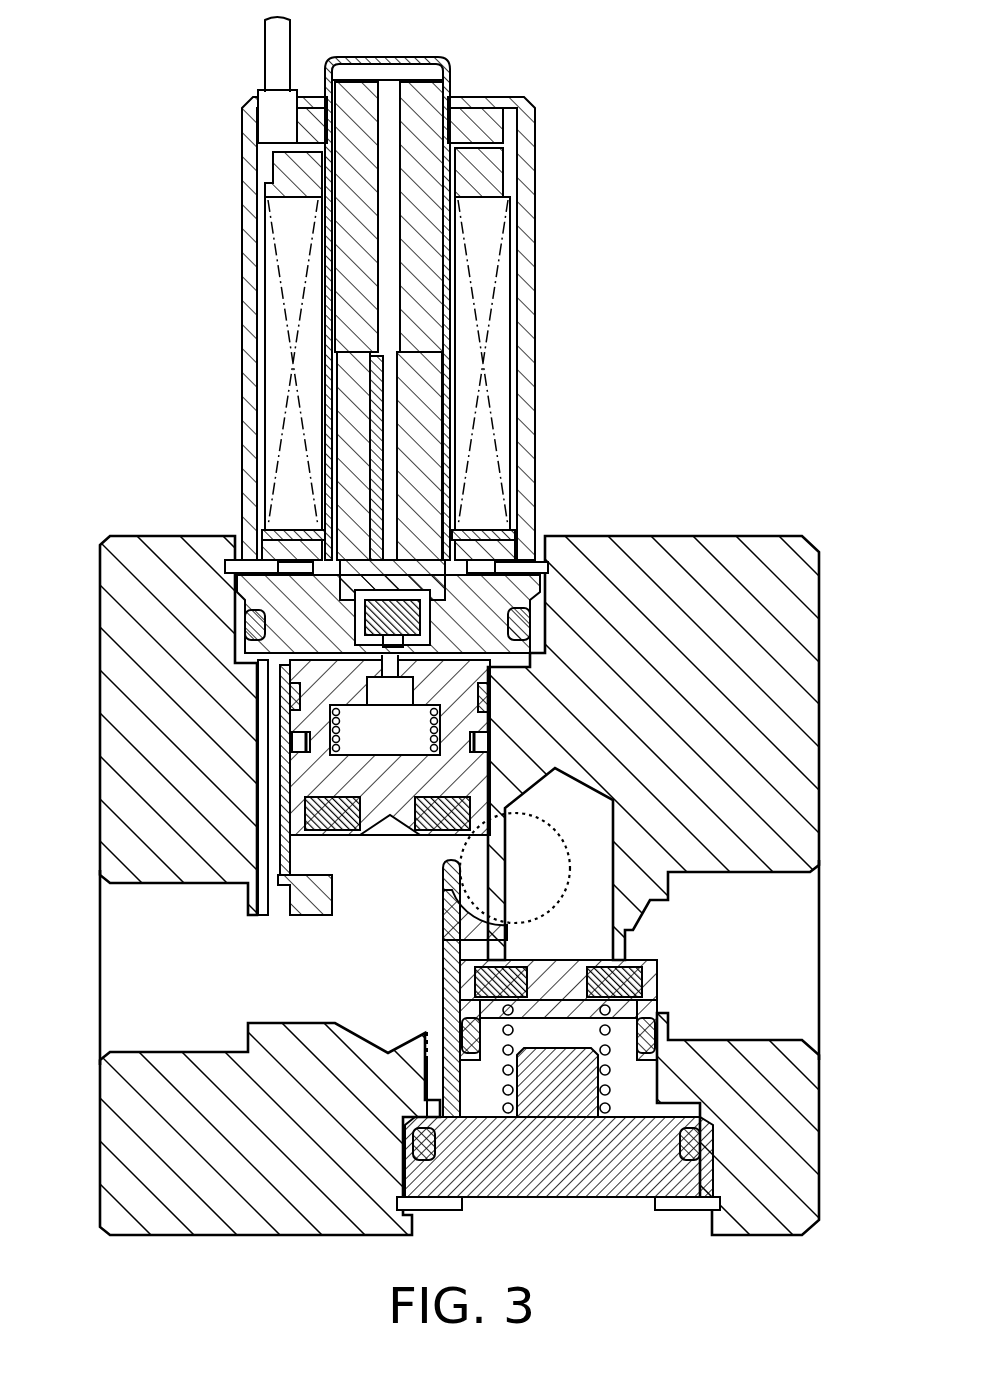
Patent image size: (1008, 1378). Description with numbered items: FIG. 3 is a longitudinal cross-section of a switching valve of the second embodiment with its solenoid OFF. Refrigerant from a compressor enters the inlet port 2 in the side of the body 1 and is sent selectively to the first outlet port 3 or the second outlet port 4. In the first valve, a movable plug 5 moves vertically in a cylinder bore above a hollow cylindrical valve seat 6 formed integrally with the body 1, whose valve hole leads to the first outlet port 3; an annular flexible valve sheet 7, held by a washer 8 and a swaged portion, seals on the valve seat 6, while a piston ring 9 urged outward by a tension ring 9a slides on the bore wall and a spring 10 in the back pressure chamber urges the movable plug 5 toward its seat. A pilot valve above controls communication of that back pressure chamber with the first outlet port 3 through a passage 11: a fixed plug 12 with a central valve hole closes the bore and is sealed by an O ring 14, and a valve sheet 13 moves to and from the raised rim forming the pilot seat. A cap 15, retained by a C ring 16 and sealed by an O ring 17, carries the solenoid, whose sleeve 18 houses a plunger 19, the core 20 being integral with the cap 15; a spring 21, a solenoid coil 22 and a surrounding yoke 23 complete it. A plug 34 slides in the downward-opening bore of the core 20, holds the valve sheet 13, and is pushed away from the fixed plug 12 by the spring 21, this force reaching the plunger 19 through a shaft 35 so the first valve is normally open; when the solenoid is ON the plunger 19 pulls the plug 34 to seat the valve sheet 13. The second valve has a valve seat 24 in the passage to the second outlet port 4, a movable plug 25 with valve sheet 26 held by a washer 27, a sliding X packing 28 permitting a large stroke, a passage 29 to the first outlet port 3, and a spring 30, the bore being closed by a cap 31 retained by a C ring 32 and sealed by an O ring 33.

The body 1 is at (819, 675).
The inlet port 2 is at (545, 838).
The first outlet port 3 is at (104, 962).
The second outlet port 4 is at (810, 948).
The movable plug 5 is at (296, 765).
The valve seat 6 is at (268, 852).
The valve sheet 7 is at (425, 832).
The washer 8 is at (345, 832).
The piston ring 9 is at (300, 740).
The tension ring 9a is at (341, 742).
The spring 10 is at (300, 692).
The passage 11 is at (300, 880).
The fixed plug 12 is at (312, 694).
The valve sheet 13 is at (365, 630).
The O ring 14 is at (490, 697).
The cap 15 is at (240, 600).
The C ring 16 is at (245, 560).
The O ring 17 is at (420, 640).
The sleeve 18 is at (404, 60).
The plunger 19 is at (415, 78).
The core 20 is at (428, 400).
The spring 21 is at (428, 632).
The solenoid coil 22 is at (505, 310).
The yoke 23 is at (527, 200).
The valve seat 24 is at (628, 932).
The movable plug 25 is at (655, 975).
The valve sheet 26 is at (470, 985).
The washer 27 is at (593, 965).
The X packing 28 is at (660, 1035).
The passage 29 is at (430, 1060).
The spring 30 is at (612, 1110).
The cap 31 is at (578, 1205).
The C ring 32 is at (430, 1215).
The O ring 33 is at (700, 1150).
The plug 34 is at (362, 540).
The shaft 35 is at (400, 438).